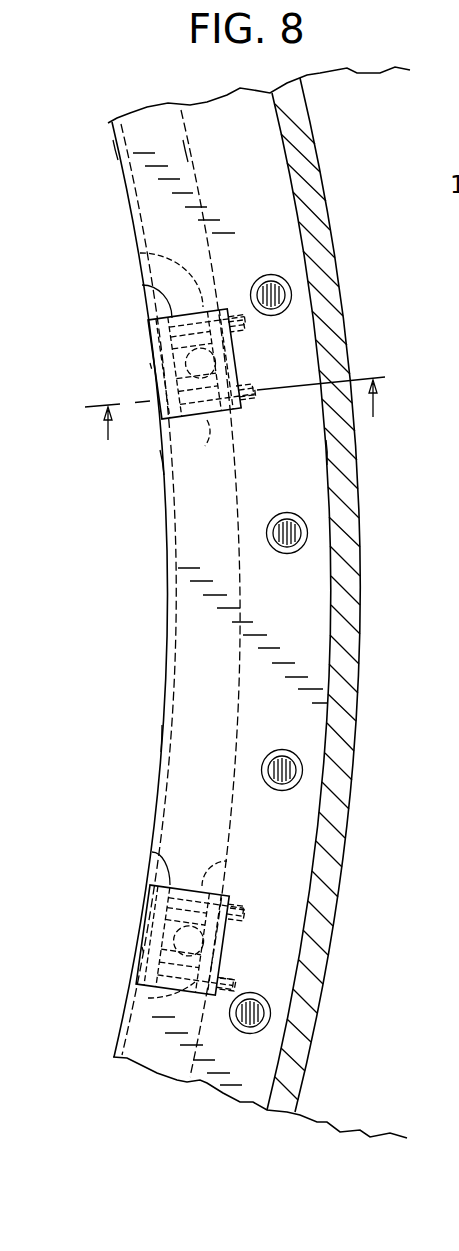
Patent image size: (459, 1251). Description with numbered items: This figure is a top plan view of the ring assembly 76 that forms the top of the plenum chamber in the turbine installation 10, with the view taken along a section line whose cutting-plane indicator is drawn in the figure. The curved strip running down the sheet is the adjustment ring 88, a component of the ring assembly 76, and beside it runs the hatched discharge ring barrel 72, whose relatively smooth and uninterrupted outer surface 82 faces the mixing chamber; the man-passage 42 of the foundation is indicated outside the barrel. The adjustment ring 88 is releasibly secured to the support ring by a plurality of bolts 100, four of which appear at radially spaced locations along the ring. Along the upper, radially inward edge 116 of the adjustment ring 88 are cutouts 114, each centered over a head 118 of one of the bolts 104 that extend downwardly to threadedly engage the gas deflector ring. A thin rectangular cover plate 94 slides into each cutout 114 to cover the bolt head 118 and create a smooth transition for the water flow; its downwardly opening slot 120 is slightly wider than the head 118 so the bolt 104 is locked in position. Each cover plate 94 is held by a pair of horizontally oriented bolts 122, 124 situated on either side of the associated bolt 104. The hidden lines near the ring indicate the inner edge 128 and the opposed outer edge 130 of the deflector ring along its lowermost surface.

The installation 10 is at (238, 394).
The man-passage 42 is at (425, 278).
The discharge ring barrel 72 is at (357, 472).
The adjustable ring assembly 76 is at (158, 545).
The outer surface 82 is at (323, 450).
The adjustment ring 88 is at (161, 740).
The cover plate 94 is at (152, 362).
The bolt 100 is at (266, 276).
The bolt 104 is at (241, 350).
The cutout 114 is at (142, 285).
The upper, radially inward edge 116 is at (162, 462).
The head 118 is at (245, 367).
The downwardly opening slot 120 is at (150, 363).
The horizontally oriented bolt 122 is at (140, 253).
The horizontally oriented bolt 124 is at (122, 999).
The inner edge 128 is at (118, 156).
The outer edge 130 is at (193, 152).